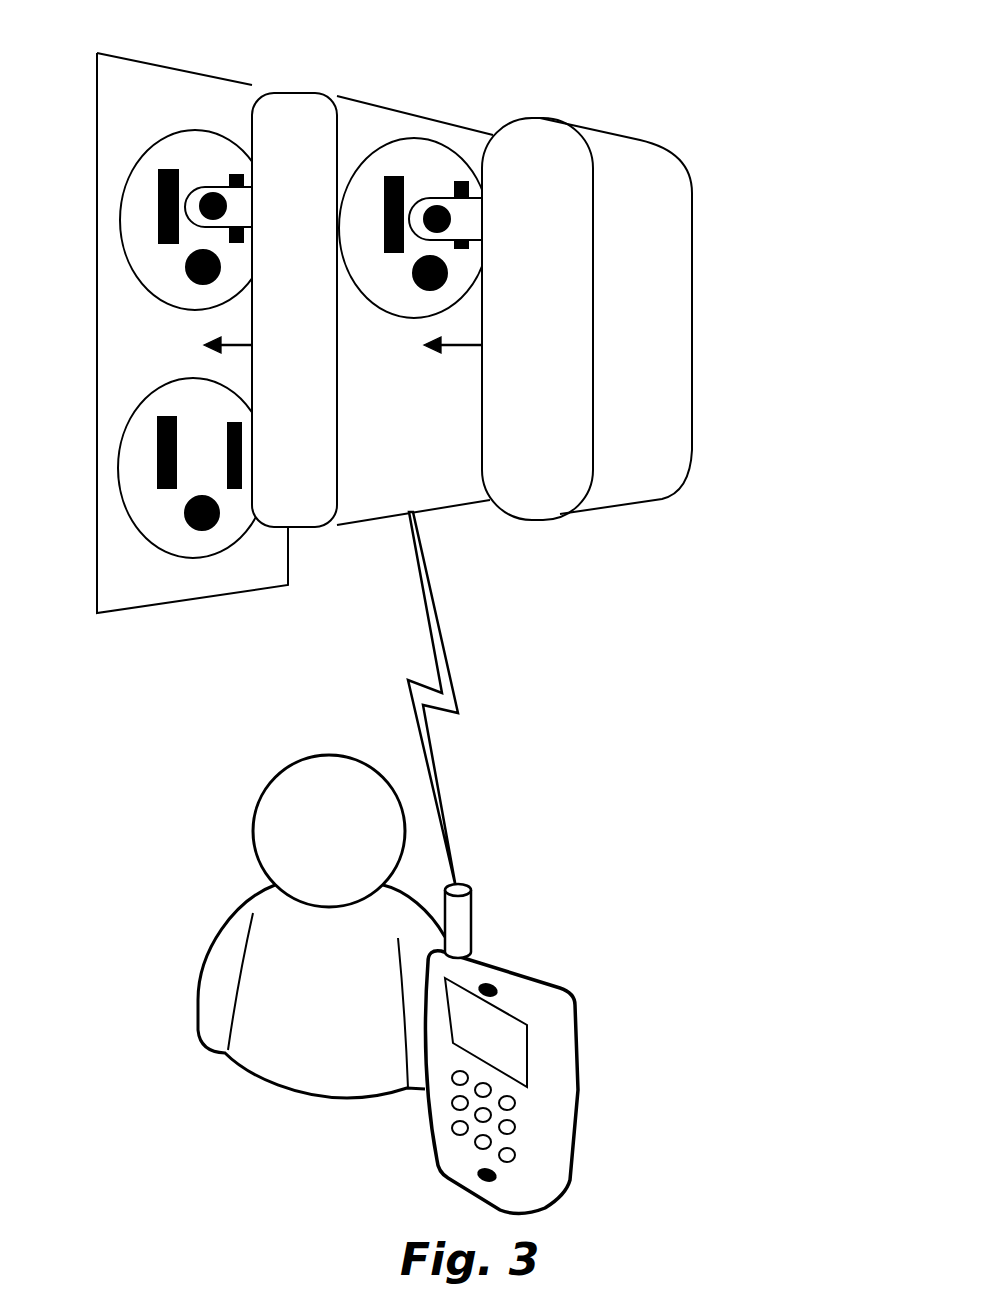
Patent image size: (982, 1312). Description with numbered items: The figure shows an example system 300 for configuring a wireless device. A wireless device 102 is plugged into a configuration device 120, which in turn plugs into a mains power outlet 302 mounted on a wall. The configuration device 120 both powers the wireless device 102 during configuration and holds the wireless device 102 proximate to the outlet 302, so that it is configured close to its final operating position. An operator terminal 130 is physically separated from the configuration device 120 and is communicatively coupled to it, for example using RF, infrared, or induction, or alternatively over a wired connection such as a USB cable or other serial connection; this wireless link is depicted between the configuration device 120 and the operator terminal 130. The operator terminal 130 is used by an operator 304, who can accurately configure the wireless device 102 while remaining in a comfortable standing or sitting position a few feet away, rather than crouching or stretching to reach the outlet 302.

The system 300 is at (744, 18).
The mains power outlet 302 is at (208, 100).
The configuration device 120 is at (388, 125).
The wireless device 102 is at (618, 145).
The operator terminal 130 is at (508, 963).
The operator 304 is at (327, 770).